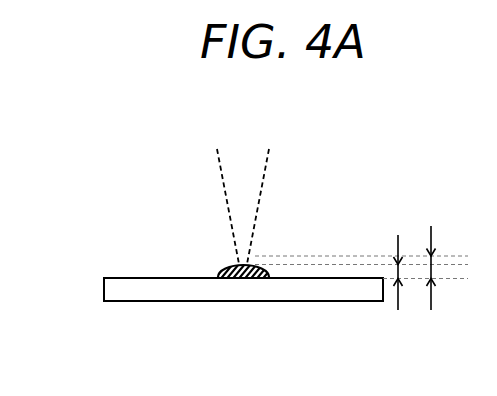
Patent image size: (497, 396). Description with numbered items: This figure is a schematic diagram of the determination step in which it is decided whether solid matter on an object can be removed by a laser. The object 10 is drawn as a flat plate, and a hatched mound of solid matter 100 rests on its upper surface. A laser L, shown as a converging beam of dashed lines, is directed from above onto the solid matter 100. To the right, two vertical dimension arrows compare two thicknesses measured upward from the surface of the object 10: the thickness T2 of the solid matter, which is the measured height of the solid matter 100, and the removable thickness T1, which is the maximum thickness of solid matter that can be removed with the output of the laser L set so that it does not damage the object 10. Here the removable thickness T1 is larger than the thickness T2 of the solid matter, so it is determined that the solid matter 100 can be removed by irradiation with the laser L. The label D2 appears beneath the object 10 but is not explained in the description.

The object 10 is at (109, 289).
The solid matter 100 is at (222, 268).
The laser L is at (224, 181).
The removable thickness T1 is at (432, 281).
The thickness of the solid matter T2 is at (399, 286).
The direction D2 is at (267, 350).